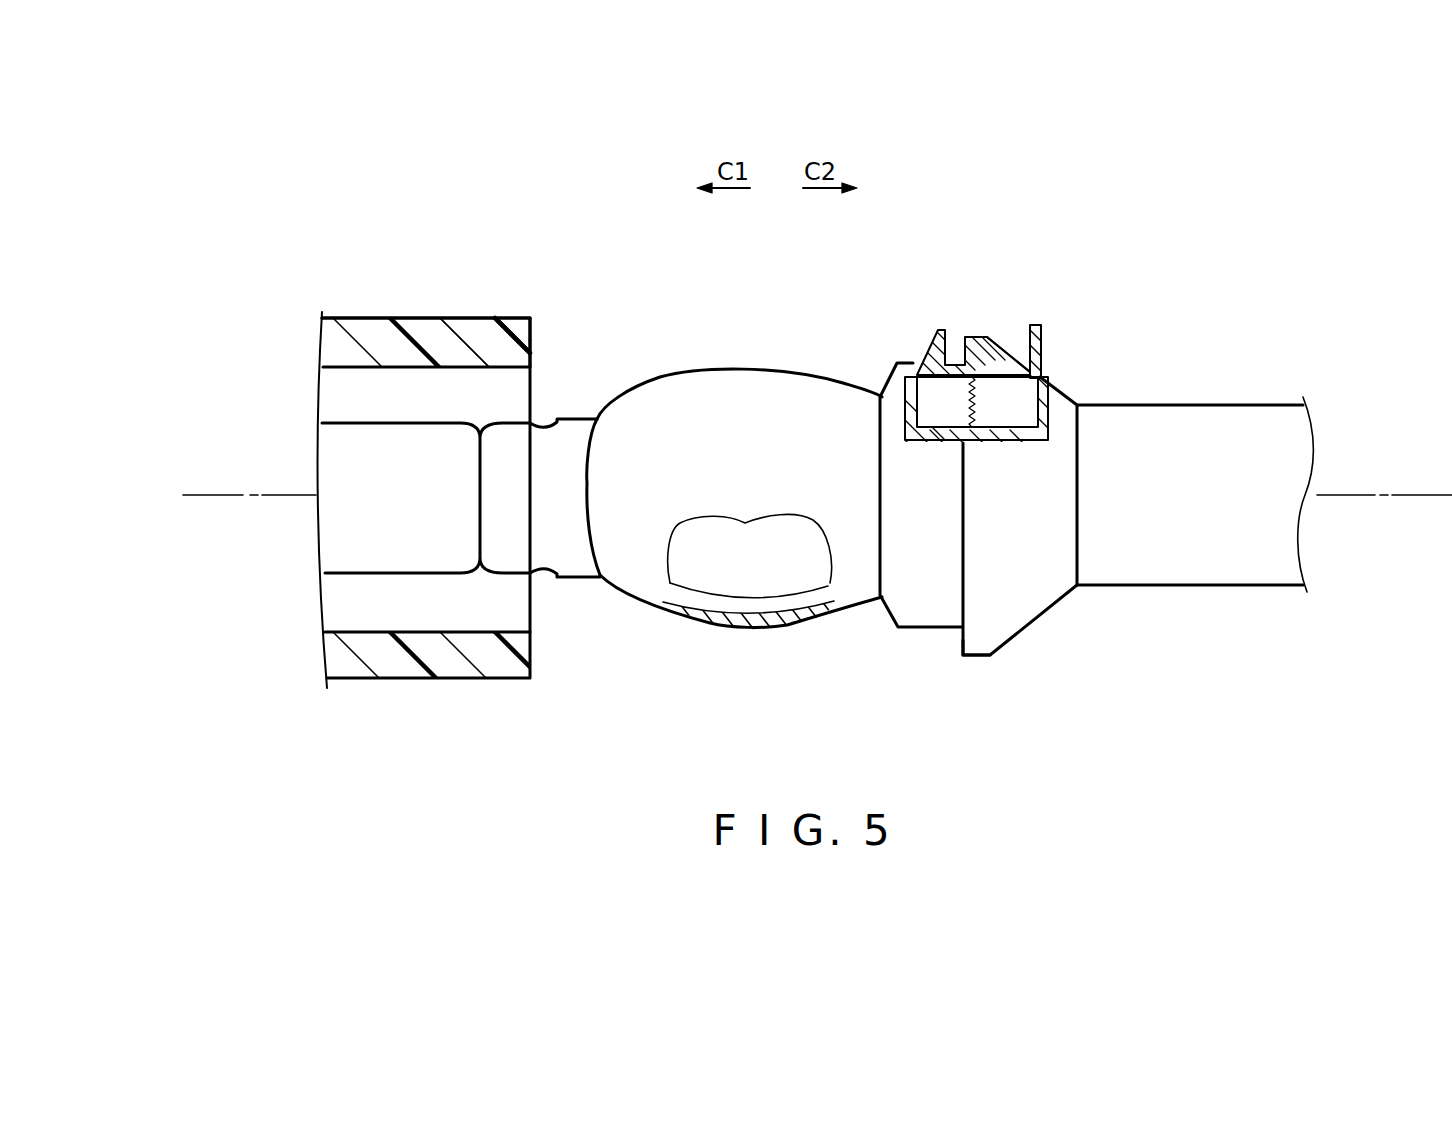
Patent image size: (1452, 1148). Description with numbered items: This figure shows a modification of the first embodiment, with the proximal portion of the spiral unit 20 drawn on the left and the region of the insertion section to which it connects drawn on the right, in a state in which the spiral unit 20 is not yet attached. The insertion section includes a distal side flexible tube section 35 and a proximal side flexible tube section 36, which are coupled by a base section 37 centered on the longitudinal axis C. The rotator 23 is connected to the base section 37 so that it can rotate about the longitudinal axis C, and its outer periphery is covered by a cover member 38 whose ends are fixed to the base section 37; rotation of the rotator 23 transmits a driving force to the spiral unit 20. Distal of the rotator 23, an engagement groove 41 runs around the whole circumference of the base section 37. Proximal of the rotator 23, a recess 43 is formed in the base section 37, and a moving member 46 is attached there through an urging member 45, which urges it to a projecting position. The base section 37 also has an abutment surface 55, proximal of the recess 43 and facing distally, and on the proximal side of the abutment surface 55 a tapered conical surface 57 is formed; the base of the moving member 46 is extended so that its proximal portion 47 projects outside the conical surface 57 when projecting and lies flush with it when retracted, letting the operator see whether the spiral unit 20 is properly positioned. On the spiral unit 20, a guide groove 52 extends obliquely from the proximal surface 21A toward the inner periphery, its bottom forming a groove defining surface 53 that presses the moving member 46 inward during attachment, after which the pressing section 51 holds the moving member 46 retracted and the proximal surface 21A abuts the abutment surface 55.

The spiral unit 20 is at (400, 296).
The proximal surface 21A is at (532, 328).
The rotator 23 is at (735, 583).
The distal side flexible tube section 35 is at (408, 560).
The proximal side flexible tube section 36 is at (1190, 572).
The base section 37 is at (908, 606).
The cover member 38 is at (773, 622).
The engagement groove 41 is at (542, 416).
The recess 43 is at (918, 380).
The urging member 45 is at (968, 393).
The moving member 46 is at (940, 332).
The proximal portion of the base of the moving member 47 is at (1043, 352).
The pressing section 51 is at (466, 372).
The guide groove 52 is at (522, 356).
The groove defining surface 53 is at (531, 350).
The abutment surface 55 is at (961, 656).
The conical surface 57 is at (996, 340).
The longitudinal axis C is at (1405, 497).